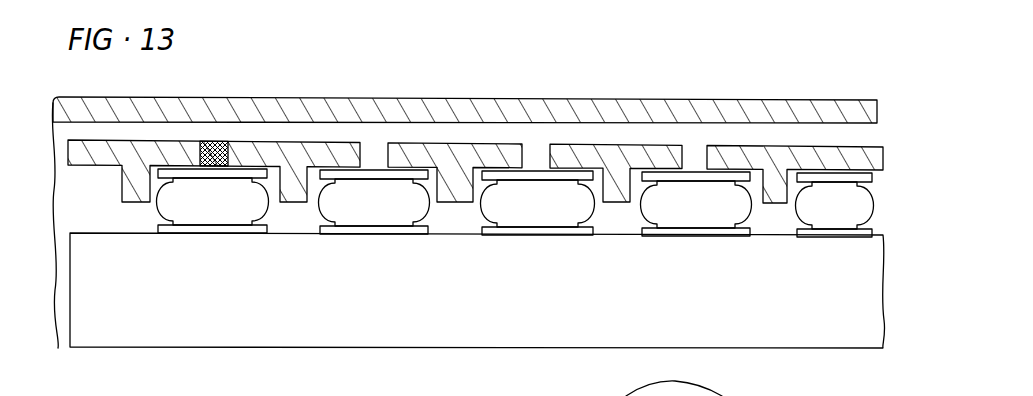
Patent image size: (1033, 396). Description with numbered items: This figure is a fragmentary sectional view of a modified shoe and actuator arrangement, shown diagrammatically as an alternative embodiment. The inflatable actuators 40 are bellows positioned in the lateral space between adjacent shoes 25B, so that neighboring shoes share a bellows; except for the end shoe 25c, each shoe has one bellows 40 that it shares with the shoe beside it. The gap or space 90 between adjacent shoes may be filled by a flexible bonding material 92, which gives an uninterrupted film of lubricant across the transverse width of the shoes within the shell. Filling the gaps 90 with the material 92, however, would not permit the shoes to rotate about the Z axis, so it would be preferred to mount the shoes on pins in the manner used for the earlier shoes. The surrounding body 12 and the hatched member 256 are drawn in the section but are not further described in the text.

The substrate 12 is at (462, 318).
The inflatable actuator 40 is at (370, 236).
The gap 90 is at (537, 150).
The flexible bonding material 92 is at (216, 144).
The apertured plate 256 is at (427, 152).
The shoe 25B is at (100, 160).
The end shoe 25c is at (880, 158).